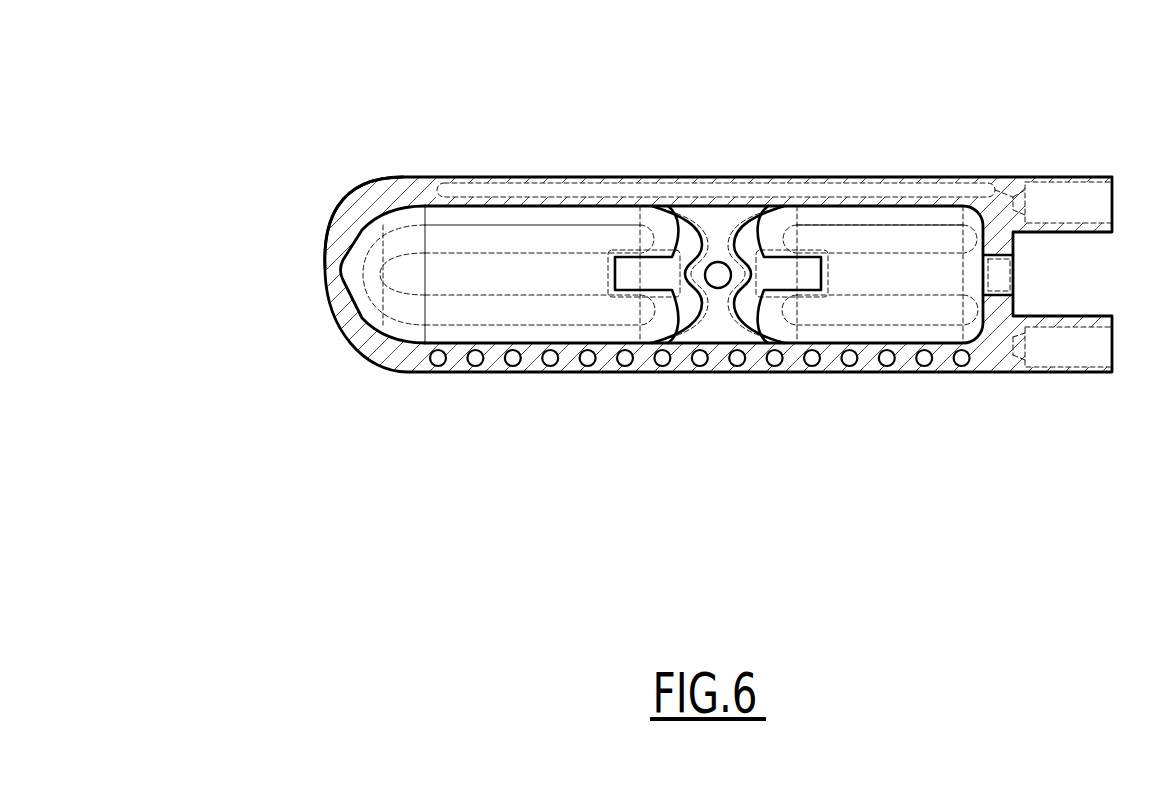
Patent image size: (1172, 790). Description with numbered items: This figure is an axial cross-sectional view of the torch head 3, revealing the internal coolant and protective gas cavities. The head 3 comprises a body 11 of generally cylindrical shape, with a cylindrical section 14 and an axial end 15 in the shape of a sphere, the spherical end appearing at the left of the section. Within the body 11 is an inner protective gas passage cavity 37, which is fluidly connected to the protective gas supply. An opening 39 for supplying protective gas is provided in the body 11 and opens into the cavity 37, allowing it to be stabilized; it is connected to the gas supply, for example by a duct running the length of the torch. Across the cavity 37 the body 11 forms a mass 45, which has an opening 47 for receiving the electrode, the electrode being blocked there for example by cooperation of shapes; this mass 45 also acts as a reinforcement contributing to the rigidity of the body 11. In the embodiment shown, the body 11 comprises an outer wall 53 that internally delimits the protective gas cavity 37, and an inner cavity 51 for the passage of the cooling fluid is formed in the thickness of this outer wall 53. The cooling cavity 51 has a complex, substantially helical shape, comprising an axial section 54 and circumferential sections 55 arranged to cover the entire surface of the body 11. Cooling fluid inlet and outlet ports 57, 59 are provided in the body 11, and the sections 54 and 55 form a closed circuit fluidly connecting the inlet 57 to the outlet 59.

The head 3 is at (256, 123).
The body 11 is at (363, 153).
The cylindrical section 14 is at (531, 178).
The axial end 15 is at (326, 270).
The inner protective gas passage cavity 37 is at (895, 214).
The opening for supplying protective gas 39 is at (1000, 270).
The mass 45 is at (797, 275).
The opening 47 is at (718, 278).
The inner cavity for the passage of the cooling fluid 51 is at (636, 182).
The outer wall 53 is at (416, 188).
The axial section 54 is at (781, 201).
The circumferential sections 55 is at (588, 360).
The cooling fluid inlet port 57 is at (1083, 182).
The cooling fluid outlet port 59 is at (1083, 362).